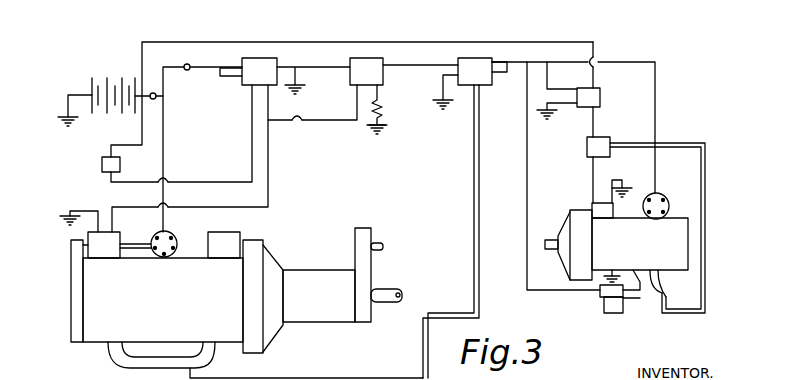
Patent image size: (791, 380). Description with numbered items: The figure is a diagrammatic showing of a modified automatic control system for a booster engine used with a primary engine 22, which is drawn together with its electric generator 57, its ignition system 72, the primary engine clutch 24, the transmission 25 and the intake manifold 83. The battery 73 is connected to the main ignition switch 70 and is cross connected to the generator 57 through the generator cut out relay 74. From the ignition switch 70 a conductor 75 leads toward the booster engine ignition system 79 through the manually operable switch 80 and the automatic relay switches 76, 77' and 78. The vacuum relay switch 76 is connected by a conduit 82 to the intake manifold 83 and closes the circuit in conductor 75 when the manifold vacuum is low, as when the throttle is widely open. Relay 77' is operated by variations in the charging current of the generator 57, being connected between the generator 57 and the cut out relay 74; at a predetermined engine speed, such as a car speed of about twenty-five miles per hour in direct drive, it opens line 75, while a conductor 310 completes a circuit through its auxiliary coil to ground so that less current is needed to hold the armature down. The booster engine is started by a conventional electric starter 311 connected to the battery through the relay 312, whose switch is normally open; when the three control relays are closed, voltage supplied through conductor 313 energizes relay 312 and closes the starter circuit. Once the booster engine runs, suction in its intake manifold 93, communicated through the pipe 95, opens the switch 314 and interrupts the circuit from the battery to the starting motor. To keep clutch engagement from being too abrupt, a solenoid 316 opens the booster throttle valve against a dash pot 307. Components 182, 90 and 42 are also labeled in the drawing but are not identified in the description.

The conductor 75 is at (175, 66).
The manually operable switch 80 is at (188, 63).
The relay 77' is at (264, 47).
The conductor 310 is at (229, 72).
The automatic relay switch 78 is at (362, 60).
The resistor 182 is at (383, 106).
The vacuum relay switch 76 is at (478, 60).
The relay terminal connection 90 is at (497, 74).
The battery 73 is at (113, 82).
The main ignition switch 70 is at (157, 99).
The conductor 313 is at (563, 90).
The relay 312 is at (600, 97).
The switch 314 is at (601, 143).
The pipe 95 is at (698, 143).
The booster engine ignition system 79 is at (664, 198).
The electric starter 311 is at (592, 207).
The starting motor 42 is at (616, 245).
The solenoid 316 is at (600, 292).
The dash pot 307 is at (610, 306).
The intake manifold 93 is at (665, 288).
The conduit 82 is at (474, 265).
The generator cut out relay 74 is at (102, 165).
The primary engine 22 is at (151, 276).
The electric generator 57 is at (115, 246).
The ignition system 72 is at (176, 240).
The primary engine clutch 24 is at (268, 328).
The transmission 25 is at (305, 315).
The intake manifold 83 is at (120, 362).